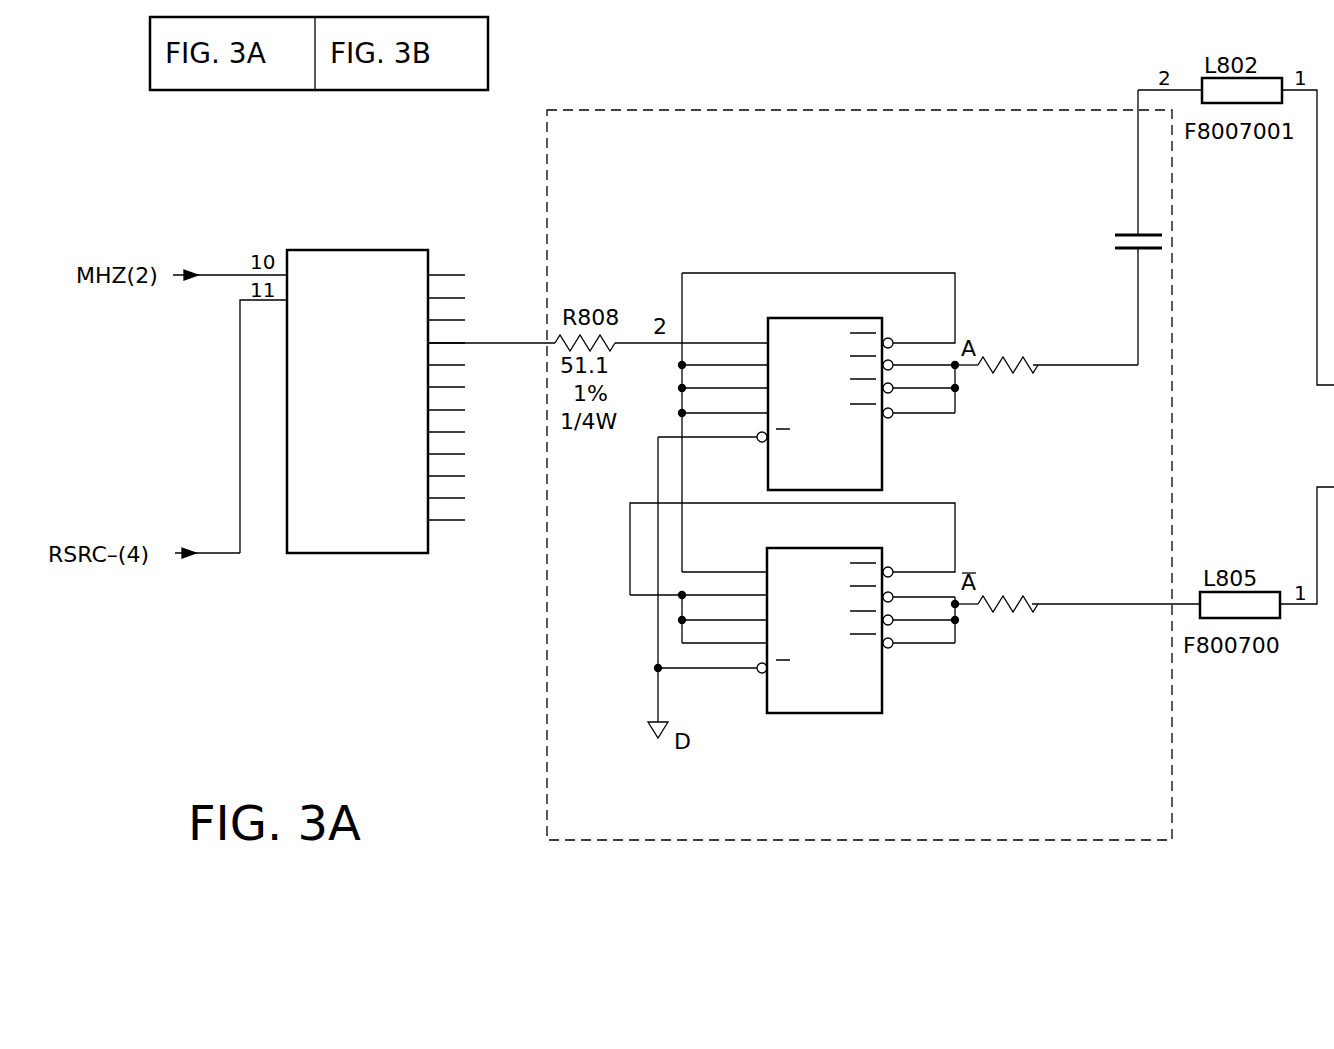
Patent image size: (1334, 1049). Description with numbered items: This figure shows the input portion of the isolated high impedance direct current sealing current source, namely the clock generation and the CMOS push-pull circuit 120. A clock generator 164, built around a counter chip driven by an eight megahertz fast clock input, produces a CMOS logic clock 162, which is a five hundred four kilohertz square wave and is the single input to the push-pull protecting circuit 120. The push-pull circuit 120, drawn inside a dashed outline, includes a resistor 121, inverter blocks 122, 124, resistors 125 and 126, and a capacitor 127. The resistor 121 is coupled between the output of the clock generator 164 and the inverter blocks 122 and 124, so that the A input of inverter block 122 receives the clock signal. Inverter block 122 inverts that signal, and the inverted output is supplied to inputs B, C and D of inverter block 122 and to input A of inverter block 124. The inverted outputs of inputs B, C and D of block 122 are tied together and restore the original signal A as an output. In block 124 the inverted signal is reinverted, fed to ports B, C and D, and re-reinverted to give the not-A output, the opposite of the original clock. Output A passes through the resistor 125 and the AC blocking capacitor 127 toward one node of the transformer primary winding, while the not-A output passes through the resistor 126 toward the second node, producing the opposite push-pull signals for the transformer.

The CMOS push-pull circuit 120 is at (846, 842).
The resistor 121 is at (612, 345).
The inverter block 122 is at (882, 322).
The inverter block 124 is at (821, 715).
The resistor 125 is at (1028, 368).
The resistor 126 is at (1028, 607).
The AC blocking capacitor 127 is at (1133, 237).
The CMOS logic clock 162 is at (477, 342).
The clock generator 164 is at (391, 556).